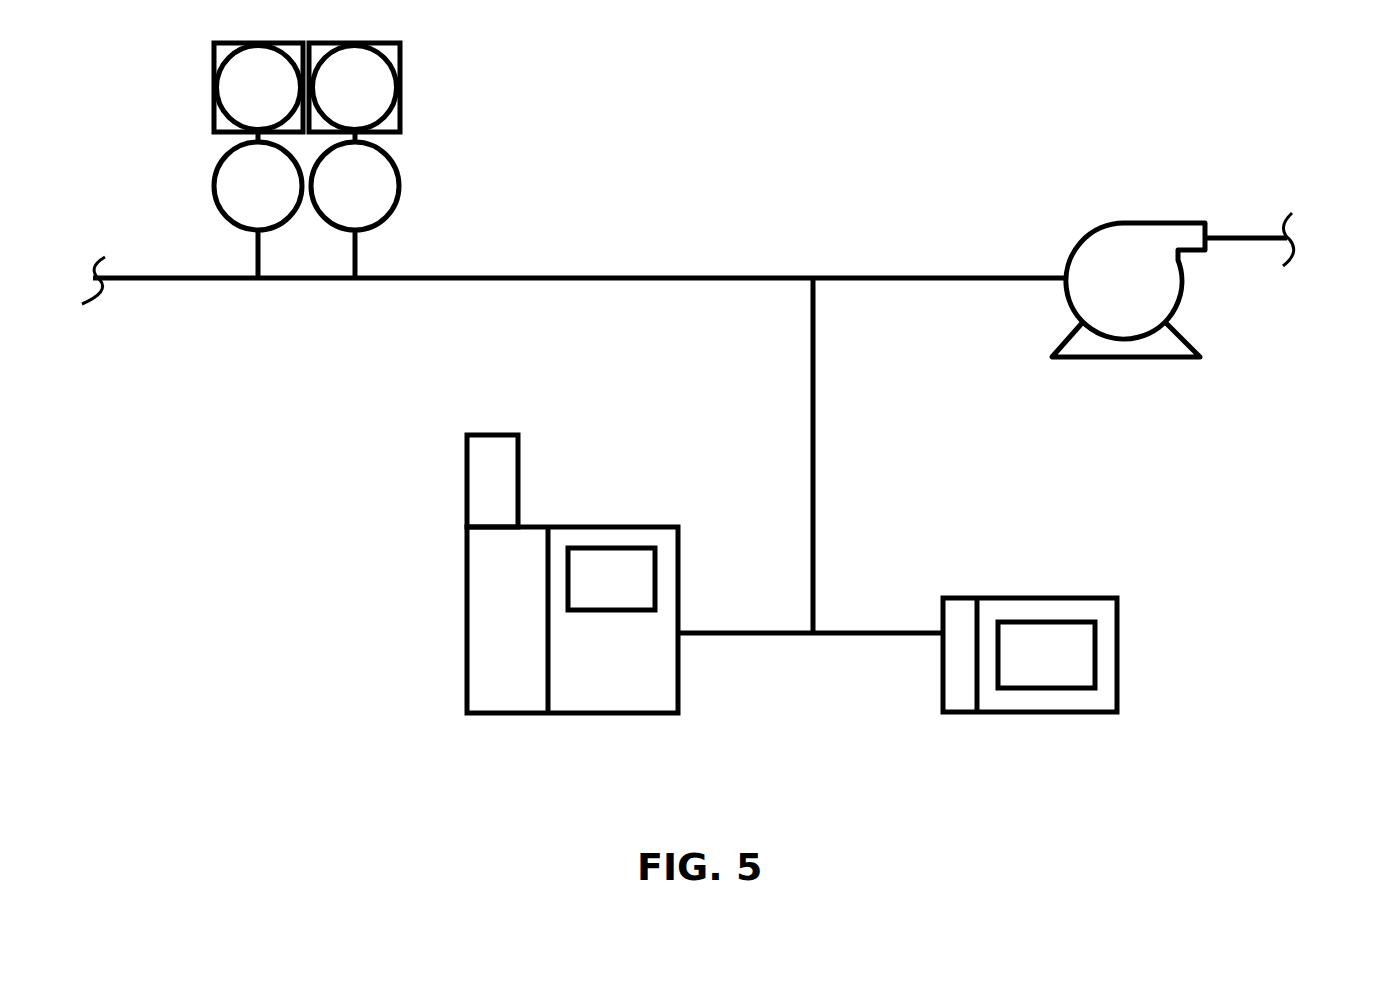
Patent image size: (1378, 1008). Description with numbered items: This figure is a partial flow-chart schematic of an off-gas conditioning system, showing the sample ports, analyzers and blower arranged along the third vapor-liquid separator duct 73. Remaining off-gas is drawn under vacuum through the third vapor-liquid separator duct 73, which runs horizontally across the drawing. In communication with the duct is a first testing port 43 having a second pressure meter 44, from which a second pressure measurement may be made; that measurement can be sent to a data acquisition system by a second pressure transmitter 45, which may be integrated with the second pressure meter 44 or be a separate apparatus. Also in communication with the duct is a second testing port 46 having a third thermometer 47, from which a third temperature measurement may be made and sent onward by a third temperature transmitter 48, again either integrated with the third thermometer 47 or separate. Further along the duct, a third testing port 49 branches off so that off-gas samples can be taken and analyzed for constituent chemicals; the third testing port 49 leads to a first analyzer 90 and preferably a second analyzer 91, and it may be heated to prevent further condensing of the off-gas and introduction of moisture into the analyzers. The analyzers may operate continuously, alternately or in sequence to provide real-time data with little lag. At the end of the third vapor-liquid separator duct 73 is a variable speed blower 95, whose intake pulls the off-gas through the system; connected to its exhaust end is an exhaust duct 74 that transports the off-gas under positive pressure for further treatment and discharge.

The first testing port 43 is at (256, 257).
The second pressure meter 44 is at (268, 203).
The second pressure transmitter 45 is at (274, 103).
The second testing port 46 is at (357, 256).
The third thermometer 47 is at (368, 203).
The third temperature transmitter 48 is at (370, 103).
The third testing port 49 is at (816, 445).
The third vapor-liquid separator duct 73 is at (135, 285).
The exhaust duct 74 is at (1237, 232).
The first analyzer 90 is at (572, 525).
The second analyzer 91 is at (1050, 598).
The variable speed blower 95 is at (1148, 297).